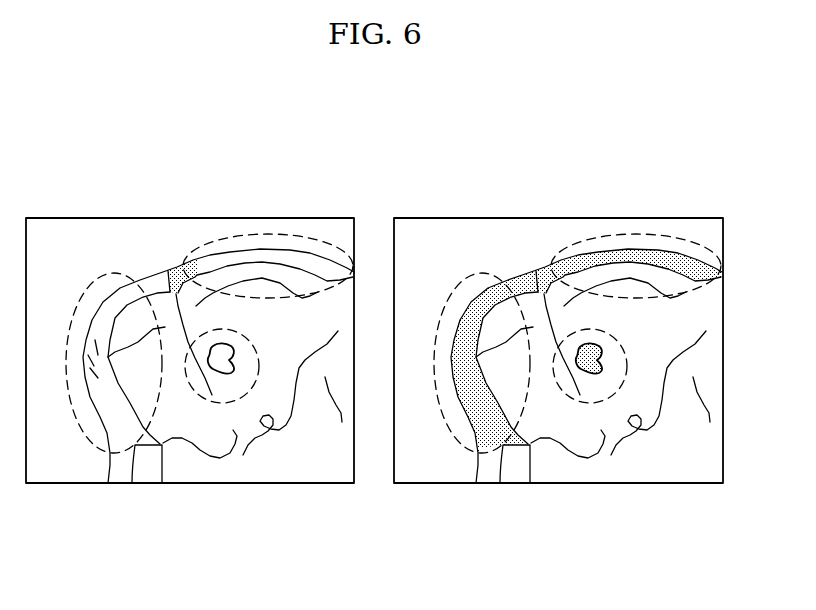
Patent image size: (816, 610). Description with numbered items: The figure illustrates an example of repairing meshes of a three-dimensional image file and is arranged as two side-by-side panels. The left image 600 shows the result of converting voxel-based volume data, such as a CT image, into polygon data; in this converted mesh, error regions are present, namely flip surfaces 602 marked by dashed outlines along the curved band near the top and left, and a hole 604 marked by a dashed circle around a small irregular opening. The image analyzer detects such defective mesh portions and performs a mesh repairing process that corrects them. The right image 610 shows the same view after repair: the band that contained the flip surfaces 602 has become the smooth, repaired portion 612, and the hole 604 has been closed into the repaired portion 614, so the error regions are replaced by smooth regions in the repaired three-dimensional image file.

The left image 600 is at (145, 483).
The flip surfaces 602 is at (213, 240).
The hole 604 is at (247, 340).
The right image 610 is at (558, 385).
The repaired portion 612 is at (577, 311).
The repaired portion 614 is at (612, 360).